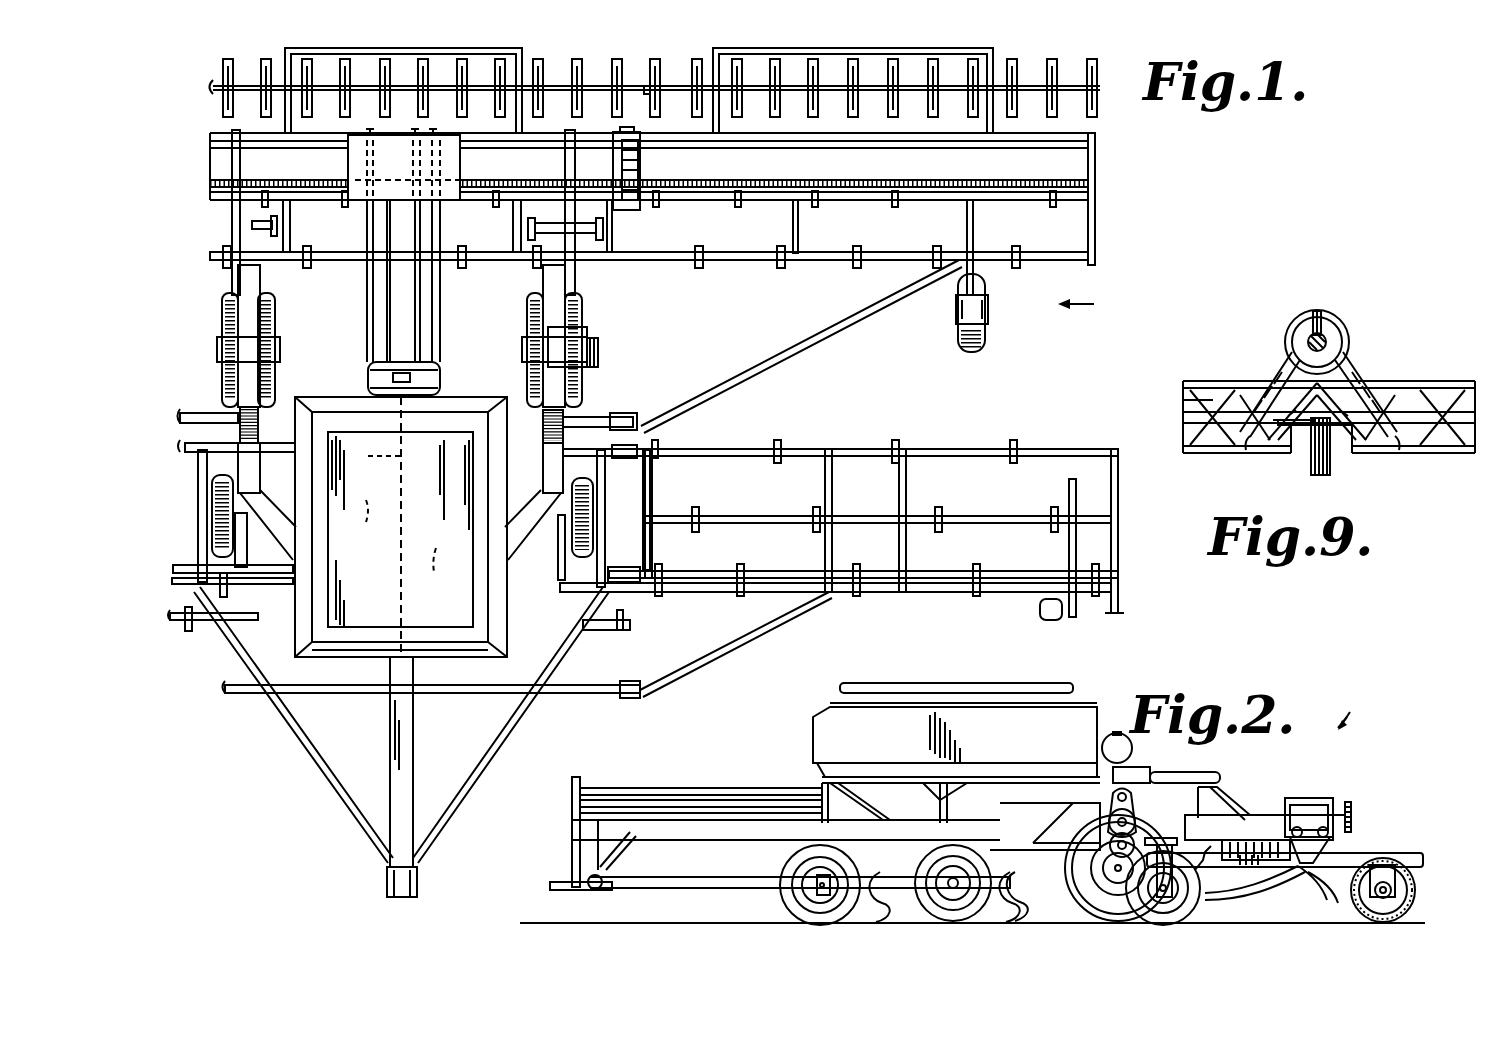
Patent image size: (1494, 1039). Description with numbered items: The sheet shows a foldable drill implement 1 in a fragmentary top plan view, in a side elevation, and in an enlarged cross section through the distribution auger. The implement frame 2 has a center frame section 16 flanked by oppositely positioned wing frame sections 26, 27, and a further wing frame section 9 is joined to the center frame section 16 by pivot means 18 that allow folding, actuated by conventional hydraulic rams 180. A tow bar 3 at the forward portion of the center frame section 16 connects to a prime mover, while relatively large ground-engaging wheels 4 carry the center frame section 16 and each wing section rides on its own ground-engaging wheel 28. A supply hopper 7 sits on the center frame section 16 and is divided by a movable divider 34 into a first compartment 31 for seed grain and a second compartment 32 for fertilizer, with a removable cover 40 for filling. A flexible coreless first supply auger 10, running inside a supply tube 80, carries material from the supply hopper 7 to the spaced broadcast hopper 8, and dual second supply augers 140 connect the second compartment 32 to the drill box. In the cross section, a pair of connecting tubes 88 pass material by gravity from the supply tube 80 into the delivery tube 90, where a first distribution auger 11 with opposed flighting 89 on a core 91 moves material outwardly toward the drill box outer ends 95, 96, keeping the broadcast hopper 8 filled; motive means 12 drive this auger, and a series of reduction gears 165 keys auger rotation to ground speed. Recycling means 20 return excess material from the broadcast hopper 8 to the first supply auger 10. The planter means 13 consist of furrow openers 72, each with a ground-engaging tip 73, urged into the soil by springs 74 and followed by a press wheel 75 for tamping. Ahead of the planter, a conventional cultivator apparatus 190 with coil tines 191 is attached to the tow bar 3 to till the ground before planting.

In FIG. 1, the foldable drill implement 1 is at (1084, 302).
In FIG. 2, the foldable drill implement 1 is at (1351, 711).
In FIG. 1, the implement frame 2 is at (413, 717).
In FIG. 2, the implement frame 2 is at (1050, 816).
In FIG. 1, the tow bar 3 is at (390, 880).
In FIG. 2, the tow bar 3 is at (728, 835).
In FIG. 1, the ground-engaging wheels 4 is at (222, 316).
In FIG. 2, the ground-engaging wheels 4 is at (1067, 870).
In FIG. 1, the supply hopper 7 is at (500, 626).
In FIG. 2, the supply hopper 7 is at (830, 706).
In FIG. 1, the broadcast hopper 8 is at (350, 160).
In FIG. 1, the wing frame section 9 is at (1072, 158).
In FIG. 2, the wing frame section 9 is at (1247, 815).
In FIG. 1, the first supply auger 10 is at (367, 290).
In FIG. 2, the first supply auger 10 is at (1283, 805).
In FIG. 9, the first supply auger 10 is at (1334, 338).
In FIG. 9, the first distribution auger 11 is at (1416, 402).
In FIG. 1, the motive means 12 is at (593, 346).
In FIG. 2, the motive means 12 is at (1352, 805).
In FIG. 9, the motive means 12 is at (1308, 457).
In FIG. 1, the planter means 13 is at (1015, 68).
In FIG. 2, the planter means 13 is at (1406, 866).
In FIG. 1, the center frame section 16 is at (490, 200).
In FIG. 1, the pivot means 18 is at (637, 132).
In FIG. 1, the recycling means 20 is at (387, 316).
In FIG. 1, the wing frame section 26 is at (1097, 172).
In FIG. 2, the wing frame section 26 is at (1340, 840).
In FIG. 1, the wing frame section 27 is at (225, 200).
In FIG. 1, the ground-engaging wheel 28 is at (958, 345).
In FIG. 1, the first compartment 31 is at (353, 502).
In FIG. 1, the second compartment 32 is at (432, 550).
In FIG. 1, the divider 34 is at (371, 456).
In FIG. 2, the cover 40 is at (940, 684).
In FIG. 1, the furrow opener 72 is at (808, 205).
In FIG. 2, the ground-engaging tip 73 is at (1200, 910).
In FIG. 2, the springs 74 is at (1190, 852).
In FIG. 1, the press wheel 75 is at (655, 84).
In FIG. 2, the press wheel 75 is at (1405, 908).
In FIG. 9, the supply tube 80 is at (1308, 318).
In FIG. 9, the connecting tubes 88 is at (1272, 368).
In FIG. 9, the flighting 89 is at (1383, 455).
In FIG. 9, the delivery tube 90 is at (1247, 458).
In FIG. 9, the core 91 is at (1190, 402).
In FIG. 1, the outer end 95 is at (590, 176).
In FIG. 1, the outer end 96 is at (215, 160).
In FIG. 1, the second supply augers 140 is at (420, 354).
In FIG. 1, the reduction gears 165 is at (600, 360).
In FIG. 2, the reduction gears 165 is at (1138, 806).
In FIG. 1, the hydraulic rams 180 is at (588, 238).
In FIG. 2, the hydraulic rams 180 is at (1228, 797).
In FIG. 1, the cultivator apparatus 190 is at (935, 448).
In FIG. 2, the cultivator apparatus 190 is at (895, 884).
In FIG. 1, the coil tines 191 is at (894, 440).
In FIG. 2, the coil tines 191 is at (1025, 912).